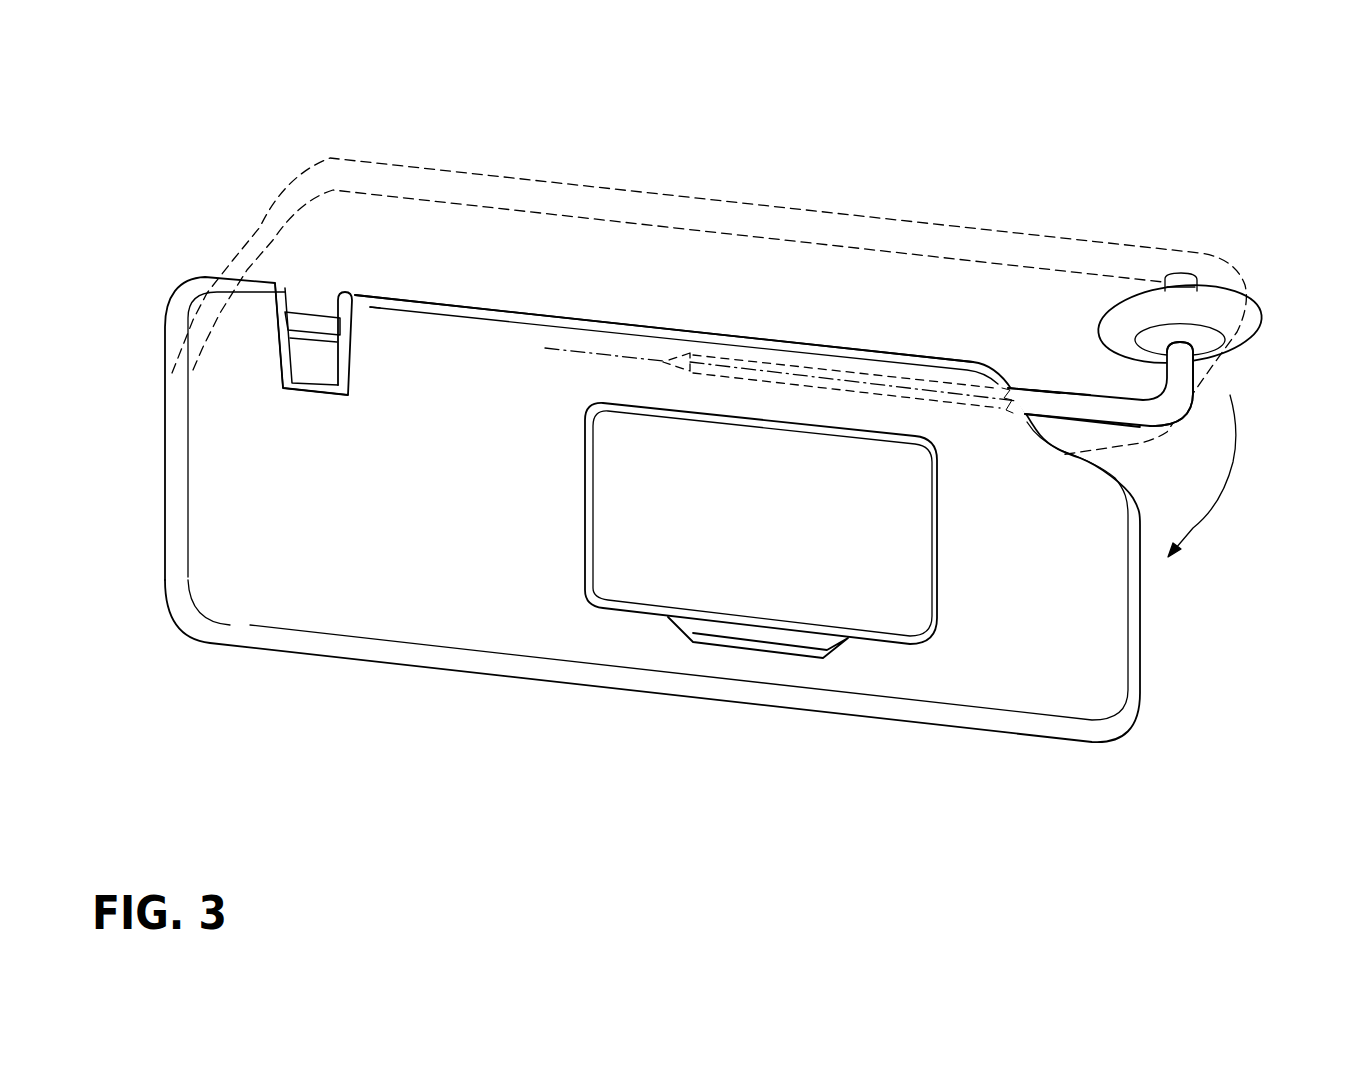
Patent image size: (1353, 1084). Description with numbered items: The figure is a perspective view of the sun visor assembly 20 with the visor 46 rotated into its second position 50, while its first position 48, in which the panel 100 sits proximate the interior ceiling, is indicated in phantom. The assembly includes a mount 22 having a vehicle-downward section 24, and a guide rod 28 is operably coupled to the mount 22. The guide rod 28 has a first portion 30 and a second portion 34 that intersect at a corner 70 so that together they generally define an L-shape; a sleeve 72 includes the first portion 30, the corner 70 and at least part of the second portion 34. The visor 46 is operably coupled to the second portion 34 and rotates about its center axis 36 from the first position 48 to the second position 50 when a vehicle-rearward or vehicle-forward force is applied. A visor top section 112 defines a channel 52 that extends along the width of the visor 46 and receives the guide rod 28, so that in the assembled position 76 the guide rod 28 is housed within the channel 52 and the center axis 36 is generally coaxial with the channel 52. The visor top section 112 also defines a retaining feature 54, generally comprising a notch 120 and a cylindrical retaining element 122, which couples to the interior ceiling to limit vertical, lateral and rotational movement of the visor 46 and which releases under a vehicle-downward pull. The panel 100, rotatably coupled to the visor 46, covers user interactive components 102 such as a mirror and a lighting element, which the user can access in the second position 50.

The sun visor assembly 20 is at (701, 434).
The mount 22 is at (1250, 308).
The vehicle-downward section 24 is at (1197, 353).
The guide rod 28 is at (1117, 428).
The first portion 30 is at (1197, 375).
The second portion 34 is at (1052, 392).
The center axis 36 is at (557, 350).
The visor 46 is at (170, 453).
The first position 48 is at (270, 183).
The second position 50 is at (167, 490).
The channel 52 is at (737, 358).
The retaining feature 54 is at (353, 335).
The corner 70 is at (1173, 423).
The sleeve 72 is at (1127, 435).
The assembled position 76 is at (1030, 387).
The panel 100 is at (608, 585).
The user interactive components 102 is at (872, 595).
The visor top section 112 is at (430, 303).
The notch 120 is at (283, 353).
The retaining element 122 is at (297, 317).